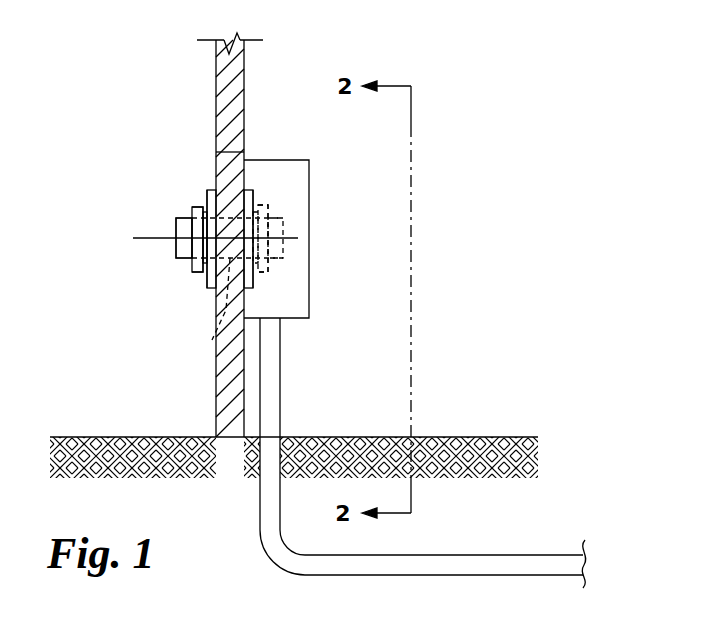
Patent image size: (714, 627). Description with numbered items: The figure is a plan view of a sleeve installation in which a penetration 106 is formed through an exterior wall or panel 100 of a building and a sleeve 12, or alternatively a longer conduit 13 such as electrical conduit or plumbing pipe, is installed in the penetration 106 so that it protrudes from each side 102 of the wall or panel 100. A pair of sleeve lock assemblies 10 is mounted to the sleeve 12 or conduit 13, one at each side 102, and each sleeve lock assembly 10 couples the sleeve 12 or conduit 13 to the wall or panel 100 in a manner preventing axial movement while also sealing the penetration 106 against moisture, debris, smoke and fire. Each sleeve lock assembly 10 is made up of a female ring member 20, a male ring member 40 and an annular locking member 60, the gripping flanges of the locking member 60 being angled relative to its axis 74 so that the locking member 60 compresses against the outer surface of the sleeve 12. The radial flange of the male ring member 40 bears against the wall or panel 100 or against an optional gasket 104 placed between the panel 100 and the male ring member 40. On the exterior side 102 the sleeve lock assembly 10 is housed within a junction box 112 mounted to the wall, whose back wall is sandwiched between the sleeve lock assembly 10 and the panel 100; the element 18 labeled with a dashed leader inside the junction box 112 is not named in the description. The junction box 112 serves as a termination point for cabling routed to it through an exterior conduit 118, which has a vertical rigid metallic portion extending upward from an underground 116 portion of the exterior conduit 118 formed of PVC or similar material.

The wall or panel 100 is at (238, 37).
The side of the wall or panel 102 is at (216, 65).
The gasket 104 is at (214, 193).
The sleeve lock assembly 10 is at (195, 207).
The sleeve 12 is at (176, 218).
The conduit 13 is at (184, 238).
The axis 74 is at (137, 238).
The annular locking member 60 is at (184, 258).
The female ring member 20 is at (200, 272).
The male ring member 40 is at (210, 290).
The penetration 106 is at (212, 340).
The fastener end 18 is at (283, 217).
The junction box 112 is at (310, 183).
The underground portion 116 is at (482, 437).
The exterior conduit 118 is at (473, 555).